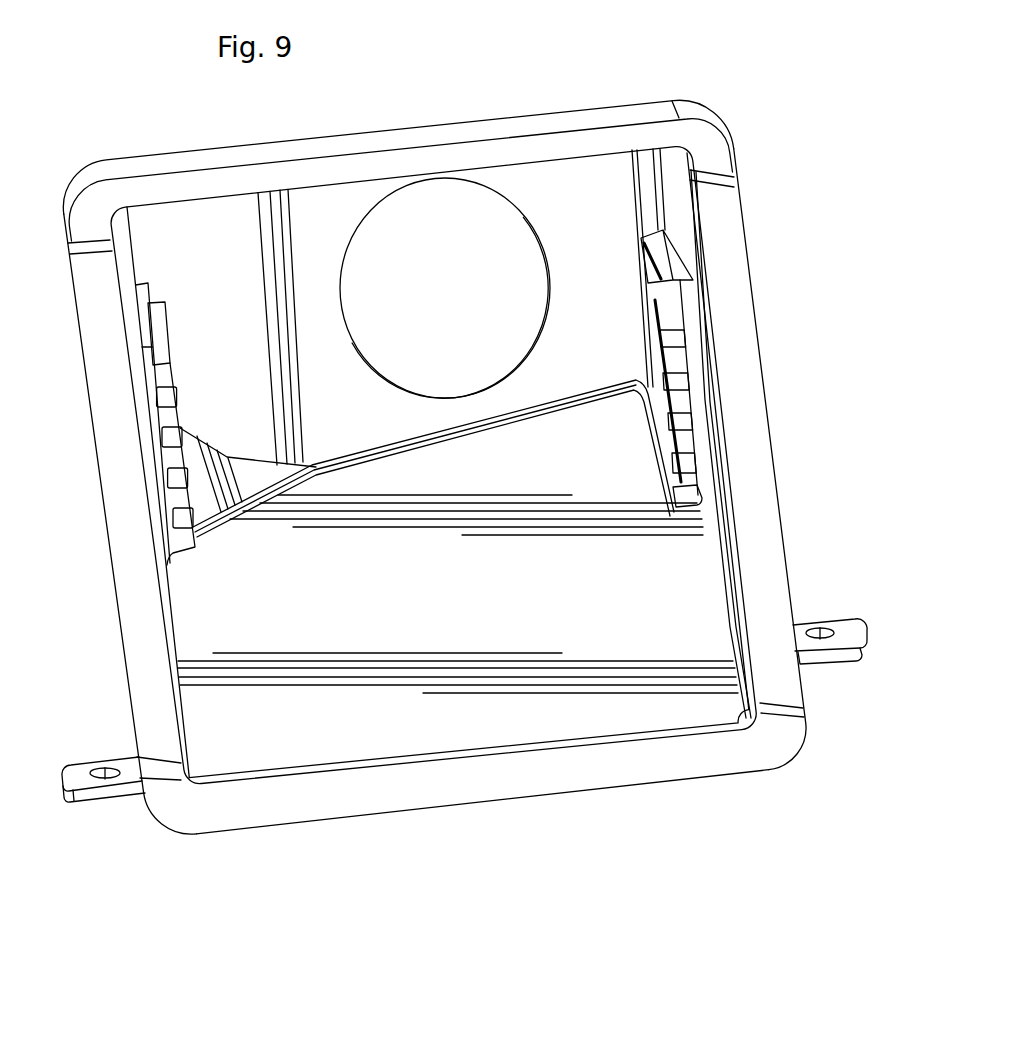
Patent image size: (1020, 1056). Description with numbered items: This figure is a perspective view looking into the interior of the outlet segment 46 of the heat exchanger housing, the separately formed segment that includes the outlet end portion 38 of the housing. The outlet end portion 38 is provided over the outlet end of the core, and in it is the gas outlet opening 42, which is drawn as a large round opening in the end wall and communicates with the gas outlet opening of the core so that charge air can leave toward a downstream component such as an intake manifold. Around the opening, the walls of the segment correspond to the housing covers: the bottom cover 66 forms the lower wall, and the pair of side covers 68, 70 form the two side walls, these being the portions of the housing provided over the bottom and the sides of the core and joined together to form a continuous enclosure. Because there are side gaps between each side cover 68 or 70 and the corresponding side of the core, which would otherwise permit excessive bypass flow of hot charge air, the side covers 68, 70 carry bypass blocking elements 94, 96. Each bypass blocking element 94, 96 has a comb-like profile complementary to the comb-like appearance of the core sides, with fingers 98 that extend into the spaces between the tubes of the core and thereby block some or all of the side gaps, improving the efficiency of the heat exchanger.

The outlet end portion 38 is at (737, 180).
The gas outlet opening 42 is at (458, 297).
The outlet segment 46 is at (752, 270).
The bottom cover 66 is at (488, 805).
The side cover 68 is at (118, 614).
The side cover 70 is at (776, 474).
The bypass blocking element 94 is at (184, 414).
The bypass blocking element 96 is at (660, 402).
The fingers 98 is at (179, 375).